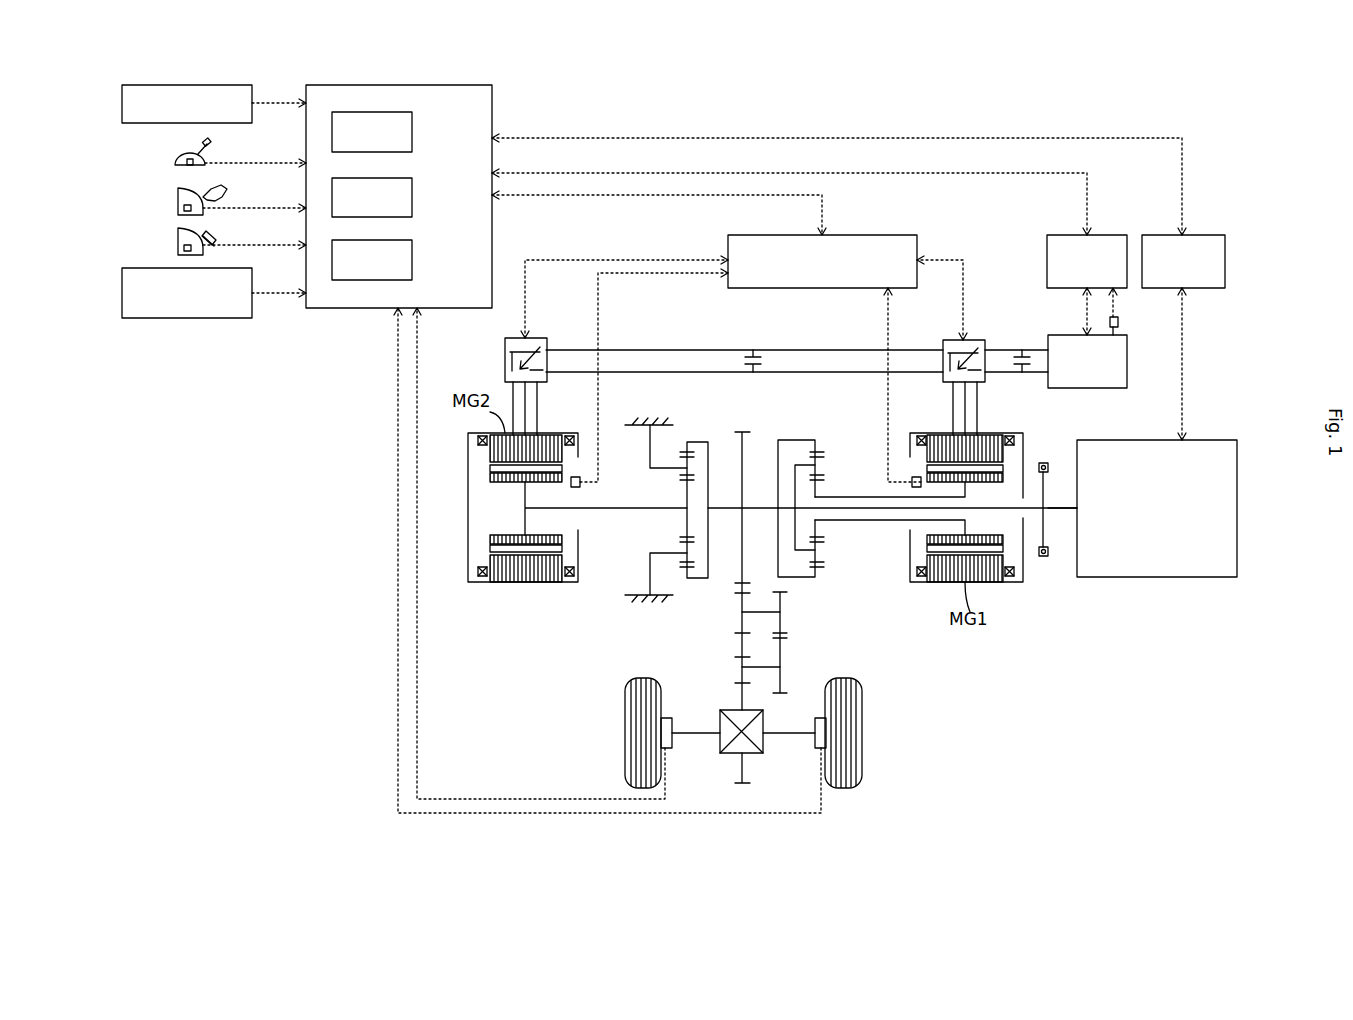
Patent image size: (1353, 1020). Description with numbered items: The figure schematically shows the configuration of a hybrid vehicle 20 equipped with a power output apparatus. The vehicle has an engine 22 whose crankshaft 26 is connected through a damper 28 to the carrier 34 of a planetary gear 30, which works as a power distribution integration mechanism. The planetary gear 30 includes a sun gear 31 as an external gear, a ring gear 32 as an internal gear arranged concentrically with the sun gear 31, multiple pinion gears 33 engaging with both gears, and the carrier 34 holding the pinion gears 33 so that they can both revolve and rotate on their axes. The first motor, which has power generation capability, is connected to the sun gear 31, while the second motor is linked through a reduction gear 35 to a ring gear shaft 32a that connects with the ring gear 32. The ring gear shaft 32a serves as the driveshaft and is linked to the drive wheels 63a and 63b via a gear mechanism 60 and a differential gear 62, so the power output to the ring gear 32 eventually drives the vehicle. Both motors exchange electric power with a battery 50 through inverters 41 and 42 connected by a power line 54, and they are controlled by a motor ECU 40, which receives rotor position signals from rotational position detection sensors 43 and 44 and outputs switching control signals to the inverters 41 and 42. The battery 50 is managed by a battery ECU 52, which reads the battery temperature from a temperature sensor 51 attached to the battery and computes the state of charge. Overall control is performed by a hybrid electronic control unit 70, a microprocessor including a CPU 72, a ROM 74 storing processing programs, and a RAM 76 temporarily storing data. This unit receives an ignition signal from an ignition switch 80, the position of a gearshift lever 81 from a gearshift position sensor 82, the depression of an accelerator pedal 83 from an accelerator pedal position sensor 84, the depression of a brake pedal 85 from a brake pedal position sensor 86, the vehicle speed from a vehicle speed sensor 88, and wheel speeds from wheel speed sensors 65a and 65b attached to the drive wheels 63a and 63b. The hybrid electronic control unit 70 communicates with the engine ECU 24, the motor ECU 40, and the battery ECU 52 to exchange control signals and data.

The hybrid vehicle 20 is at (990, 113).
The engine 22 is at (1237, 470).
The engine ECU 24 is at (1200, 235).
The crankshaft 26 is at (1060, 509).
The damper 28 is at (1043, 556).
The planetary gear 30 is at (871, 490).
The sun gear 31 is at (818, 522).
The ring gear 32 is at (820, 572).
The ring gear shaft 32a is at (728, 508).
The pinion gears 33 is at (820, 548).
The carrier 34 is at (793, 472).
The reduction gear 35 is at (688, 420).
The motor ECU 40 is at (860, 235).
The inverter 41 is at (985, 341).
The inverter 42 is at (540, 338).
The rotational position detection sensor 43 is at (913, 477).
The rotational position detection sensor 44 is at (576, 477).
The battery 50 is at (1087, 388).
The temperature sensor 51 is at (1120, 321).
The battery ECU 52 is at (1065, 235).
The power line 54 is at (805, 372).
The gear mechanism 60 is at (808, 628).
The differential gear 62 is at (765, 745).
The drive wheel 63a is at (625, 765).
The drive wheel 63b is at (862, 765).
The wheel speed sensor 65a is at (667, 718).
The wheel speed sensor 65b is at (820, 718).
The hybrid electronic control unit 70 is at (397, 85).
The CPU 72 is at (412, 132).
The ROM 74 is at (412, 197).
The RAM 76 is at (412, 260).
The ignition switch 80 is at (122, 100).
The gearshift lever 81 is at (200, 152).
The gearshift position sensor 82 is at (176, 163).
The accelerator pedal 83 is at (205, 196).
The accelerator pedal position sensor 84 is at (178, 208).
The brake pedal 85 is at (205, 238).
The brake pedal position sensor 86 is at (178, 250).
The vehicle speed sensor 88 is at (122, 290).